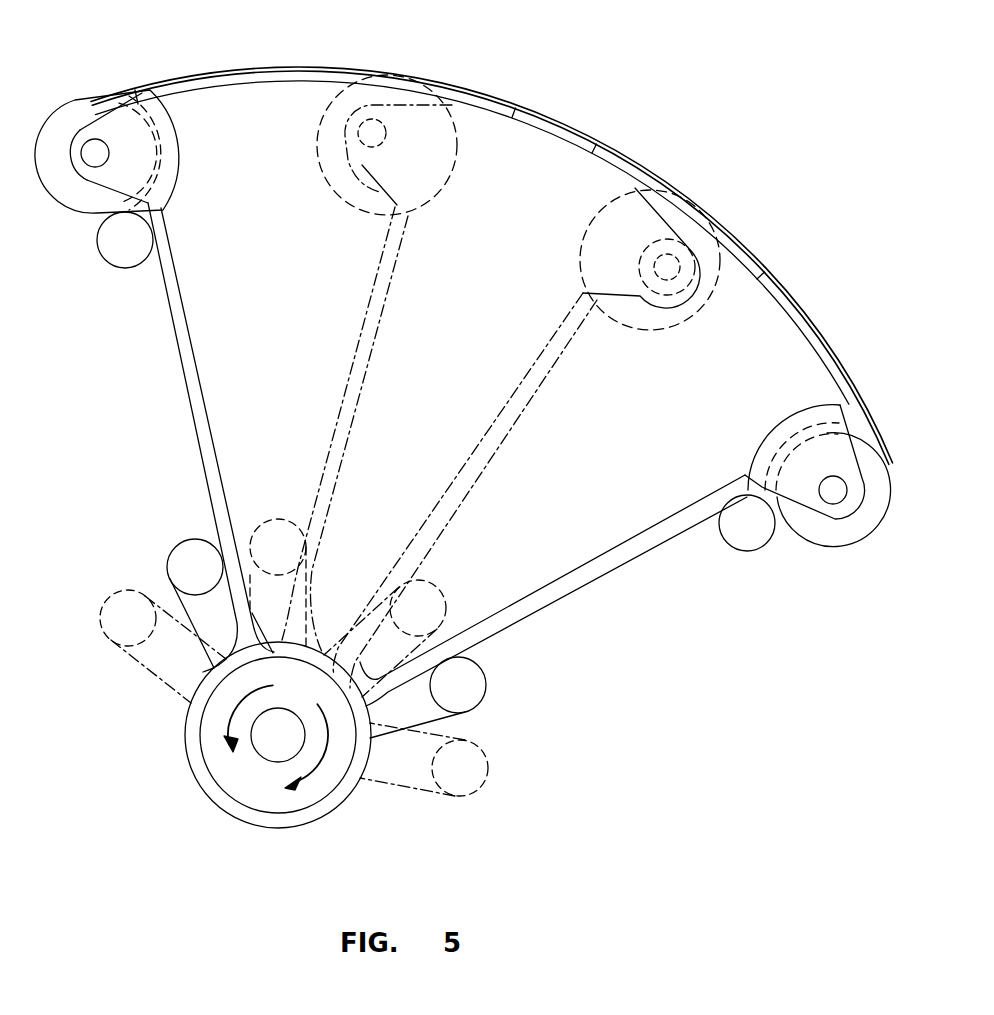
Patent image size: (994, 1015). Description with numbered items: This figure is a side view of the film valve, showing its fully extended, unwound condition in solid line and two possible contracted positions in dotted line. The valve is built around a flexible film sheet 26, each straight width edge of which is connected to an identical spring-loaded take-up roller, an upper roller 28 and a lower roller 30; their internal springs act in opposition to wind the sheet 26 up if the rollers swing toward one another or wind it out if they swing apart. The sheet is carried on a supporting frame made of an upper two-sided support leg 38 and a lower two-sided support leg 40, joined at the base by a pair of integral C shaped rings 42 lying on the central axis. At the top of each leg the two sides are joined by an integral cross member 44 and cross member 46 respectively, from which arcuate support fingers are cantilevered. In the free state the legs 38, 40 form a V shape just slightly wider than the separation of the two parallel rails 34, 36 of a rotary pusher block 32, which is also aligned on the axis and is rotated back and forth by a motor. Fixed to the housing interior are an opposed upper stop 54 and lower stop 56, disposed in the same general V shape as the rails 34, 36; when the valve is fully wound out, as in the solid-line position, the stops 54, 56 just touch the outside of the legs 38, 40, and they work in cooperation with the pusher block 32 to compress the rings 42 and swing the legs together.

The film sheet 26 is at (561, 126).
The upper roller 28 is at (67, 191).
The lower roller 30 is at (702, 300).
The rotary pusher block 32 is at (243, 782).
The rail 34 is at (182, 558).
The rail 36 is at (435, 596).
The upper support leg 38 is at (187, 347).
The lower support leg 40 is at (509, 418).
The C shaped rings 42 is at (187, 756).
The cross member 44 is at (182, 153).
The cross member 46 is at (763, 445).
The upper stop 54 is at (117, 258).
The lower stop 56 is at (748, 537).